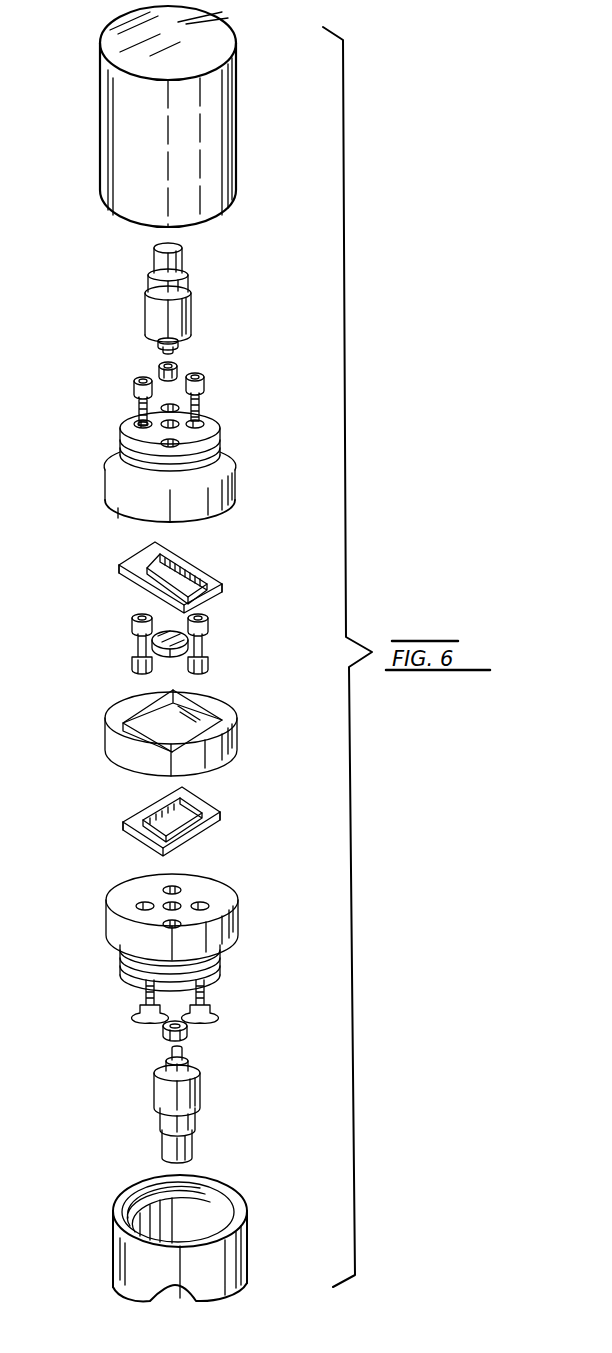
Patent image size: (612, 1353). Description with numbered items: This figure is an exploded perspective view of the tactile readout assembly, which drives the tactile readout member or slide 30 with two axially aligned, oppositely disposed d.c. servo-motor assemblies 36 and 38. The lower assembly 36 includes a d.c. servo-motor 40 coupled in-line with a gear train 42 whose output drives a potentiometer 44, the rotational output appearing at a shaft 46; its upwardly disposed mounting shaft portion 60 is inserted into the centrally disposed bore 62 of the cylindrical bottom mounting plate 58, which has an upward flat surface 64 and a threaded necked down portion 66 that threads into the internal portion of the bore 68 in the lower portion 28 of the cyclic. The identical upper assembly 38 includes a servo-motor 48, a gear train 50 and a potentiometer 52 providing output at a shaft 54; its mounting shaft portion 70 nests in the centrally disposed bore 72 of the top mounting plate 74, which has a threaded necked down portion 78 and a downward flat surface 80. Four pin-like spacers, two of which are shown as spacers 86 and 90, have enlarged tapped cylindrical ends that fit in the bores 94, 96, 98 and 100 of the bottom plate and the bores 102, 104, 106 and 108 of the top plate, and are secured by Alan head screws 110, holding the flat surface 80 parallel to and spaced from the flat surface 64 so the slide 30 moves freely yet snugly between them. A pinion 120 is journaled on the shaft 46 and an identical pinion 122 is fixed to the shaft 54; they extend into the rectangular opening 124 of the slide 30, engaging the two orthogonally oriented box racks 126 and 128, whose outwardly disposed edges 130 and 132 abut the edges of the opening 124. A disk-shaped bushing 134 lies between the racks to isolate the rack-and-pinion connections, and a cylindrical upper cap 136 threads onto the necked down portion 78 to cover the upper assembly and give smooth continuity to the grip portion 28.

The upper cap 136 is at (120, 97).
The d.c. servo-motor assembly 38 is at (150, 300).
The d.c. servo-motor 48 is at (184, 263).
The gear train 50 is at (150, 284).
The potentiometer 52 is at (192, 313).
The mounting shaft portion 70 is at (158, 345).
The output shaft 54 is at (201, 346).
The pinion 122 is at (159, 371).
The Alan head screws 110 is at (133, 389).
The bore 104 is at (183, 408).
The centrally disposed bore 72 is at (140, 421).
The bore 106 is at (206, 426).
The bore 102 is at (140, 427).
The bore 108 is at (160, 447).
The threaded necked down portion 78 is at (232, 449).
The top mounting plate 74 is at (168, 456).
The flat surface 80 is at (124, 516).
The outwardly disposed edge 132 is at (139, 559).
The box rack 128 is at (197, 570).
The spacer 86 is at (136, 643).
The spacer 90 is at (208, 643).
The disk-shaped bushing 134 is at (165, 652).
The rectangular opening 124 is at (185, 728).
The slide 30 is at (167, 727).
The outwardly disposed edge 130 is at (205, 805).
The box rack 126 is at (140, 812).
The bore 96 is at (175, 886).
The flat surface 64 is at (143, 885).
The centrally disposed bore 62 is at (180, 905).
The bore 94 is at (136, 905).
The bore 98 is at (209, 905).
The bore 100 is at (163, 925).
The bottom mounting plate 58 is at (163, 913).
The necked down portion 66 is at (130, 964).
The pinion 120 is at (165, 1031).
The output shaft 46 is at (183, 1051).
The mounting shaft portion 60 is at (165, 1064).
The d.c. servo-motor assembly 36 is at (160, 1095).
The potentiometer 44 is at (201, 1094).
The gear train 42 is at (165, 1119).
The d.c. servo-motor 40 is at (204, 1144).
The bore 68 is at (212, 1203).
The lower portion 28 is at (159, 1232).